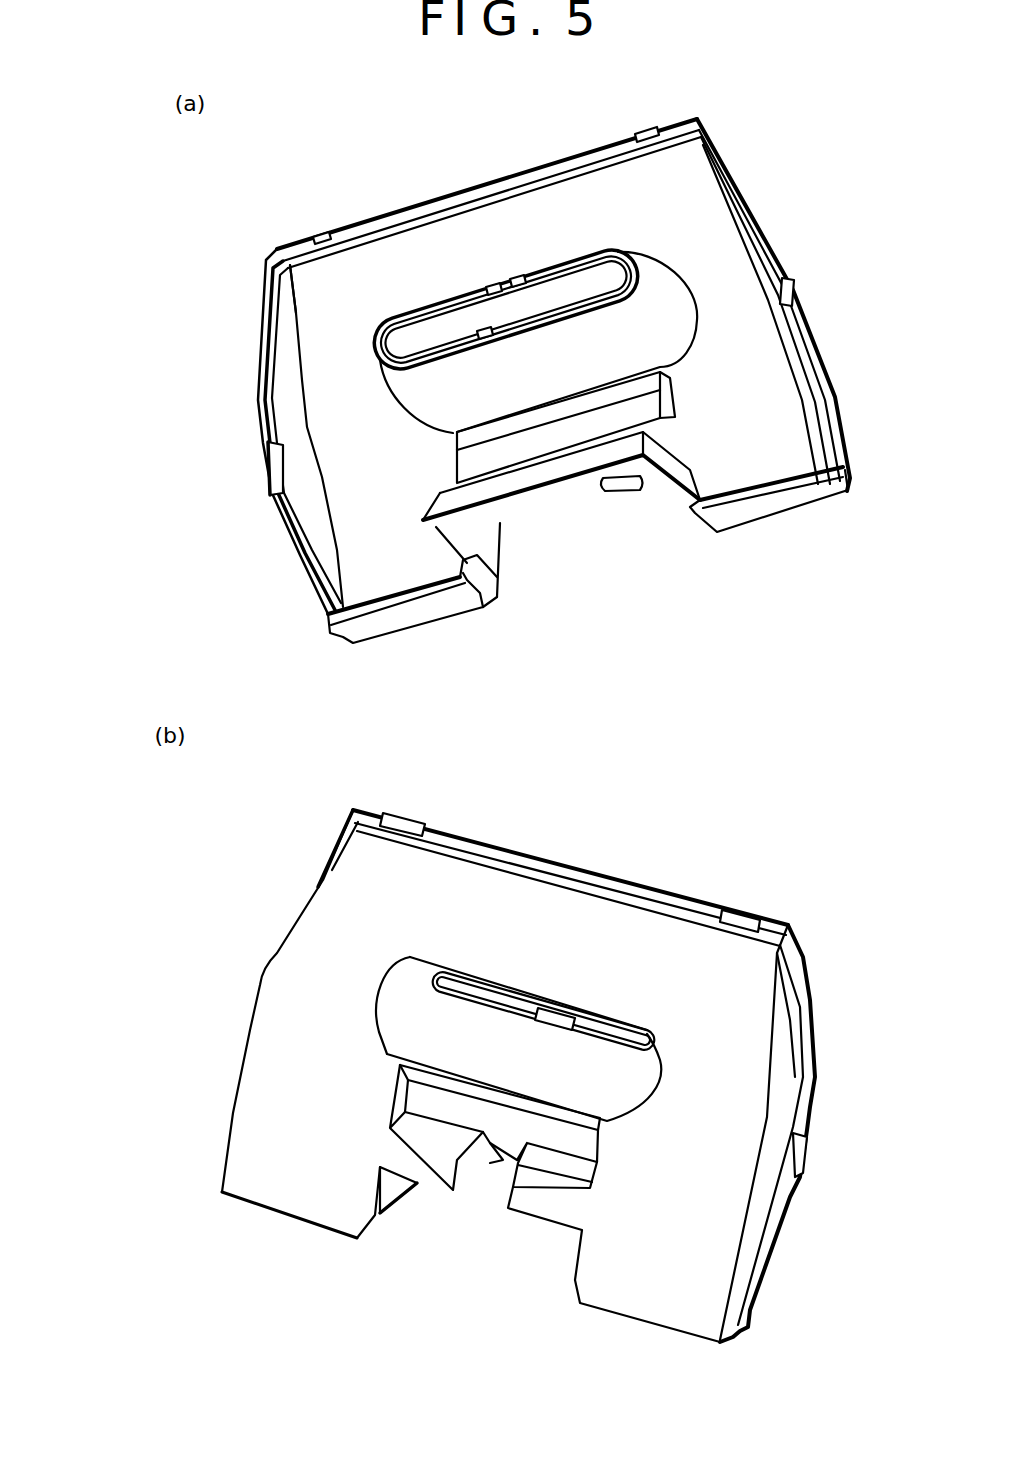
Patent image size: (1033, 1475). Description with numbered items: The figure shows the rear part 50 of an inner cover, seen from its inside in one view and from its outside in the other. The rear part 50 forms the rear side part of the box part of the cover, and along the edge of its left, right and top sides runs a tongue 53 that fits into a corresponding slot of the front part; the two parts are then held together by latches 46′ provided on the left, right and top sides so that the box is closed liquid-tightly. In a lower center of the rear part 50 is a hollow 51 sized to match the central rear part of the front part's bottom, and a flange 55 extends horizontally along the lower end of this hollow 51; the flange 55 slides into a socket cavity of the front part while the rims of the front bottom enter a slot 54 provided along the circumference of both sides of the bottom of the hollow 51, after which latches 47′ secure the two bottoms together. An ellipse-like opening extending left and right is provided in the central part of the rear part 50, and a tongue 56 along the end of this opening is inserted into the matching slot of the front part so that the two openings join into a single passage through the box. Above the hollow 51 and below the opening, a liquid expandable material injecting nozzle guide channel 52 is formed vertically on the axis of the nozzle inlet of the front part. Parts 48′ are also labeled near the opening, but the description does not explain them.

The latch 46′ is at (317, 231).
The latch 47′ is at (563, 497).
The engaging tab 48′ is at (483, 330).
The rear part 50 is at (230, 562).
The hollow 51 is at (587, 495).
The liquid expandable material injecting nozzle guide channel 52 is at (600, 540).
The tongue 53 is at (427, 197).
The slot 54 is at (407, 600).
The flange 55 is at (508, 527).
The tongue 56 is at (393, 307).